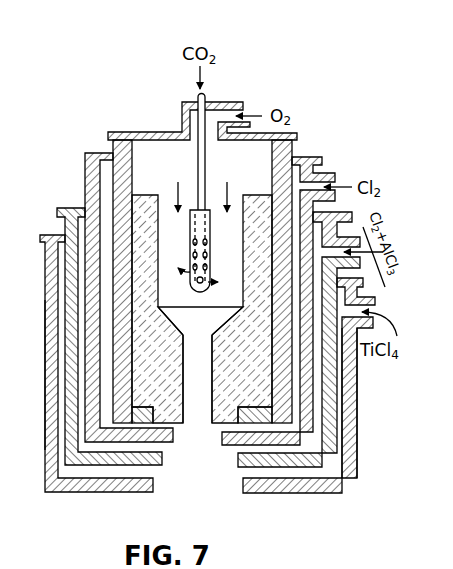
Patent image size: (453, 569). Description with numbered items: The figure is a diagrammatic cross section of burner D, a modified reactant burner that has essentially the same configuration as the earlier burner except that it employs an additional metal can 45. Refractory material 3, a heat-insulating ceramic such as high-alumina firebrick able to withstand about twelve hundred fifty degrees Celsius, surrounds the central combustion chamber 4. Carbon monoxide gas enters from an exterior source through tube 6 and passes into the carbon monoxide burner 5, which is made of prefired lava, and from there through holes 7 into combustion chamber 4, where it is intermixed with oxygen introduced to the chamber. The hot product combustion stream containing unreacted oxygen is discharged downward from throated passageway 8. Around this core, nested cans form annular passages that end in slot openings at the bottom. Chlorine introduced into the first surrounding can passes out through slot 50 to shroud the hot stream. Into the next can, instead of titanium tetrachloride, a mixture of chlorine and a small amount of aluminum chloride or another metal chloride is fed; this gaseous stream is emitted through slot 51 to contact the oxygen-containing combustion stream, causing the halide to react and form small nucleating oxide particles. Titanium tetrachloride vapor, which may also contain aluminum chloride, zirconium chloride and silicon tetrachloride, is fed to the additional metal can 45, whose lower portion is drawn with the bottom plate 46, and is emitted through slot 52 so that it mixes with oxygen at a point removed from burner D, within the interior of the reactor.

The refractory material 3 is at (143, 202).
The combustion chamber 4 is at (200, 321).
The carbon monoxide burner 5 is at (218, 210).
The tube 6 is at (198, 167).
The holes 7 is at (209, 242).
The throated passageway 8 is at (197, 379).
The metal can 45 is at (373, 428).
The outer bottom plate 46 is at (265, 495).
The slot 50 is at (240, 448).
The slot 51 is at (152, 447).
The slot 52 is at (145, 472).
The burner D is at (39, 374).